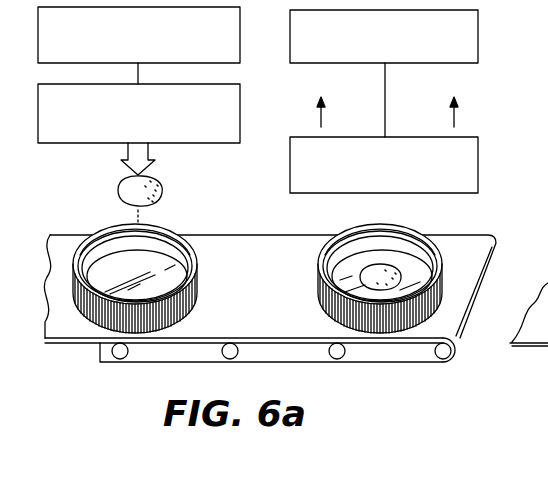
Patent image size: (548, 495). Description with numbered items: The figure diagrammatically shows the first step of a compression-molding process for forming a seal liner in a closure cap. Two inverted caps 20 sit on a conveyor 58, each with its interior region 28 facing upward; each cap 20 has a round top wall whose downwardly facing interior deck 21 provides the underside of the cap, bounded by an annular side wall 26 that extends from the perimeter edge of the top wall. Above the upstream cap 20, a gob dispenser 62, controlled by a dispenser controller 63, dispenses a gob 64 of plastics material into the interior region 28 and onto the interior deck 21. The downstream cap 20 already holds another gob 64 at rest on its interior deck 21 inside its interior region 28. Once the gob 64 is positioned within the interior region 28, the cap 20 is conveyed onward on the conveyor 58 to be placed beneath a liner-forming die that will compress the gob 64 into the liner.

The cap 20 is at (268, 291).
The interior deck 21 is at (160, 288).
The annular side wall 26 is at (188, 316).
The interior region 28 is at (118, 276).
The conveyor 58 is at (462, 358).
The gob dispenser 62 is at (258, 118).
The dispenser controller 63 is at (240, 43).
The gob 64 is at (163, 184).